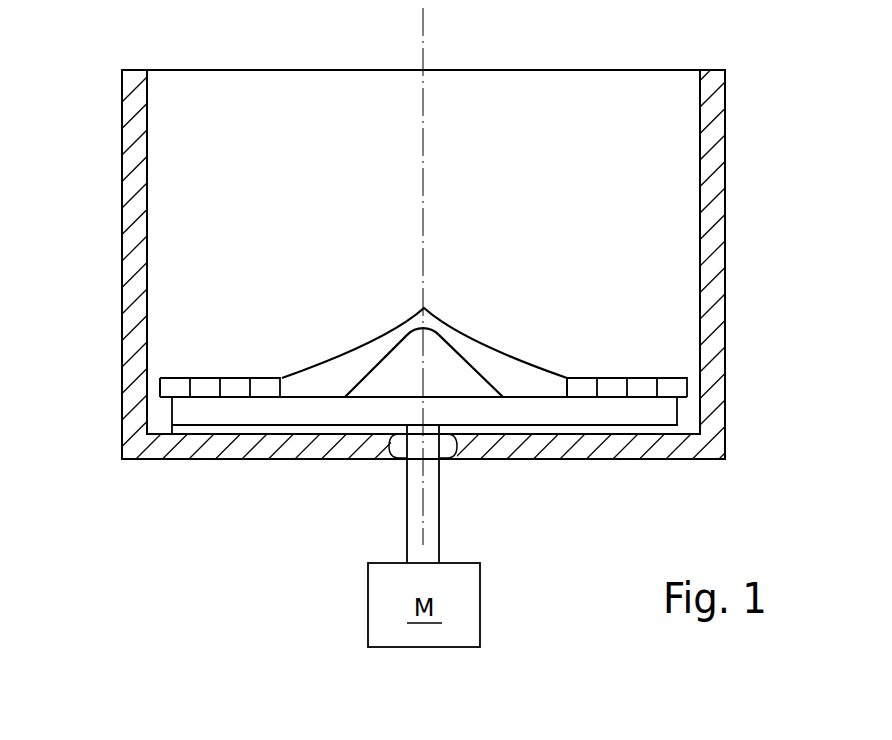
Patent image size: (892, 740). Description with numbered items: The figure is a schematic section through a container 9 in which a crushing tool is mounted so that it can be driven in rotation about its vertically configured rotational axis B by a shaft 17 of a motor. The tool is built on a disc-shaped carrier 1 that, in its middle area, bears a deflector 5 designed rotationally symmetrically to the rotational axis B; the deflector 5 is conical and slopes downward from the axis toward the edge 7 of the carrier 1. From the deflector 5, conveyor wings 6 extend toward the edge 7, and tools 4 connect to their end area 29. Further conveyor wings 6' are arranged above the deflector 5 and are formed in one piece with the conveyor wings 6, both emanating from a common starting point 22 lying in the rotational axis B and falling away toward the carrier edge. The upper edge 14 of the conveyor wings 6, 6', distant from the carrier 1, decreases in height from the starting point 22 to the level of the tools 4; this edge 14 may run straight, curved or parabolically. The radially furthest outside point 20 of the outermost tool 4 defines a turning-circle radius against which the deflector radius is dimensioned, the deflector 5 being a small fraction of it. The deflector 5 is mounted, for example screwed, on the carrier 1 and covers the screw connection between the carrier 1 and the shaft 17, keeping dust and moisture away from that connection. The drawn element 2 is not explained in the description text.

The carrier 1 is at (484, 435).
The deformable element 2 is at (458, 314).
The tools 4 is at (235, 388).
The deflector 5 is at (397, 380).
The conveyor wings 6 is at (508, 339).
The conveyor wings 6' is at (471, 315).
The edge 7 is at (158, 396).
The container 9 is at (713, 125).
The upper edge 14 is at (313, 368).
The shaft 17 is at (430, 483).
The radially furthest outside point 20 is at (686, 380).
The starting point 22 is at (424, 308).
The end area 29 is at (573, 369).
The rotational axis B is at (424, 37).